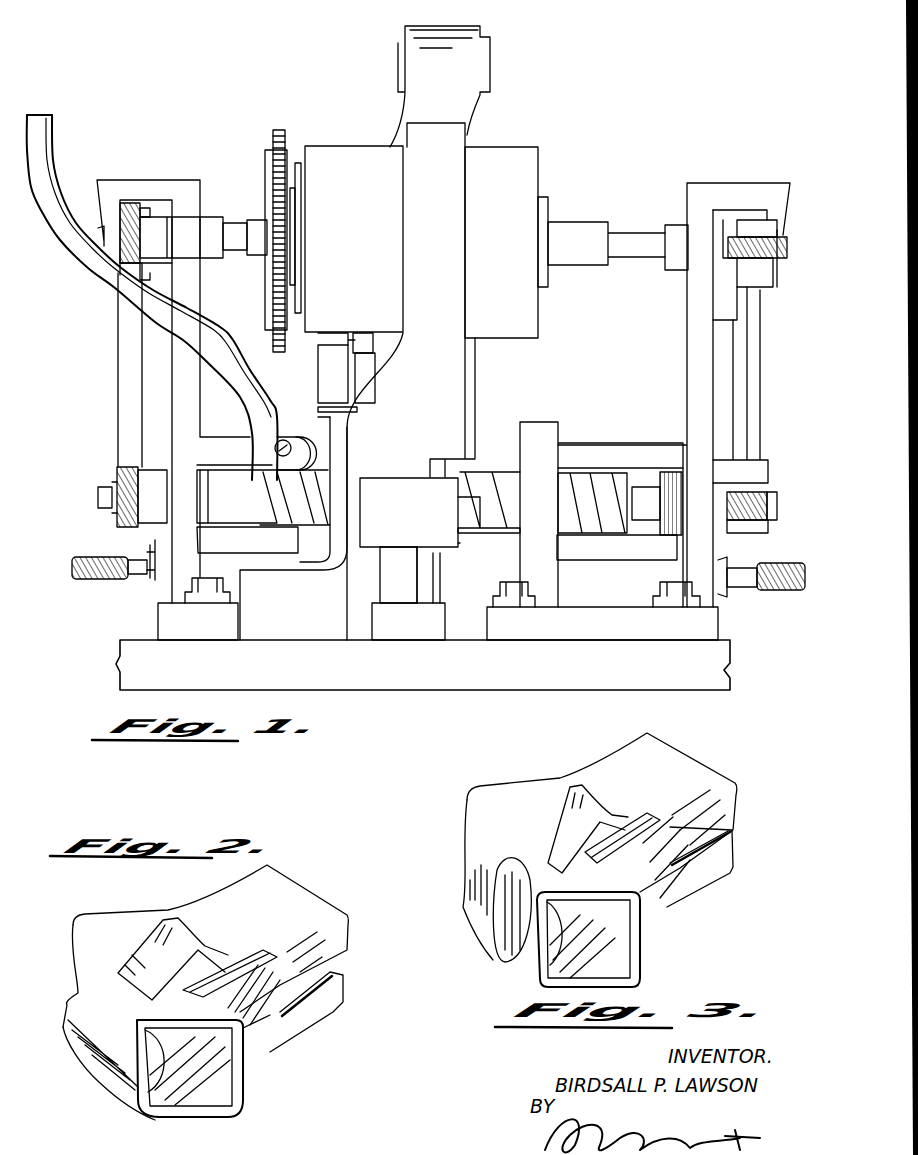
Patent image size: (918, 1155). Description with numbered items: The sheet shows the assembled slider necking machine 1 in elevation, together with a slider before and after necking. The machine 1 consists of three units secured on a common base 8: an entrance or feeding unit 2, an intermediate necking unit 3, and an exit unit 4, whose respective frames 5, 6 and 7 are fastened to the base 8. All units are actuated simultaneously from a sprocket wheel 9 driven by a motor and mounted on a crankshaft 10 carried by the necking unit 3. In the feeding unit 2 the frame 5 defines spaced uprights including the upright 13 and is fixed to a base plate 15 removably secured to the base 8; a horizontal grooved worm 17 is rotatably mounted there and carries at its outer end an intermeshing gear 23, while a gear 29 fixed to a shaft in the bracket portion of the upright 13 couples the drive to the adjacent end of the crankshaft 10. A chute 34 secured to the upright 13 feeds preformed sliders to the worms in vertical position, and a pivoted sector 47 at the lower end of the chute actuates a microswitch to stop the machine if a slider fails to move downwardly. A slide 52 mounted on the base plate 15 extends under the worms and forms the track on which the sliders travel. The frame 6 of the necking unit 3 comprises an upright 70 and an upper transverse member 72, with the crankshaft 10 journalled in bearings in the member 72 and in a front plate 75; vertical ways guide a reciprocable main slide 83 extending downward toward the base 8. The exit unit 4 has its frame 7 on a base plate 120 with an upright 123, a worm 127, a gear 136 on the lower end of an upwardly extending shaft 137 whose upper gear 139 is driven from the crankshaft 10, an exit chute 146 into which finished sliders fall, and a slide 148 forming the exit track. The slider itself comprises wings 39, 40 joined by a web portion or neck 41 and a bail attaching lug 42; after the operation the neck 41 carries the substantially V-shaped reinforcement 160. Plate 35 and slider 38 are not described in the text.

In FIG. 1, the machine 1 is at (370, 86).
In FIG. 1, the entrance or feeding unit 2 is at (140, 538).
In FIG. 1, the intermediate or necking unit 3 is at (482, 390).
In FIG. 1, the exit unit 4 is at (625, 438).
In FIG. 1, the frame 5 is at (180, 575).
In FIG. 1, the frame 6 is at (398, 590).
In FIG. 1, the frame 7 is at (700, 585).
In FIG. 1, the common base 8 is at (440, 668).
In FIG. 1, the sprocket wheel 9 is at (272, 140).
In FIG. 1, the crankshaft 10 is at (570, 232).
In FIG. 1, the upright 13 is at (180, 400).
In FIG. 1, the base plate 15 is at (175, 620).
In FIG. 1, the worm 17 is at (318, 505).
In FIG. 1, the gear 23 is at (100, 498).
In FIG. 1, the gear 29 is at (132, 205).
In FIG. 1, the chute 34 is at (80, 250).
In FIG. 1, the plate 35 is at (118, 378).
In FIG. 1, the sector 47 is at (290, 445).
In FIG. 1, the slide 52 is at (293, 548).
In FIG. 1, the upright 70 is at (450, 163).
In FIG. 1, the upper transverse member 72 is at (360, 160).
In FIG. 1, the front plate 75 is at (518, 165).
In FIG. 1, the main slide 83 is at (460, 100).
In FIG. 1, the base plate 120 is at (532, 628).
In FIG. 1, the upright 123 is at (690, 320).
In FIG. 1, the worm 127 is at (500, 450).
In FIG. 1, the gear 136 is at (775, 522).
In FIG. 1, the shaft 137 is at (745, 364).
In FIG. 1, the gear 139 is at (728, 245).
In FIG. 1, the exit chute 146 is at (638, 527).
In FIG. 1, the slide 148 is at (583, 550).
In FIG. 2, the clip 38 is at (221, 992).
In FIG. 3, the clip 38 is at (579, 870).
In FIG. 2, the wing 39 is at (292, 895).
In FIG. 3, the wing 39 is at (695, 770).
In FIG. 2, the wing 40 is at (325, 1015).
In FIG. 3, the wing 40 is at (712, 880).
In FIG. 2, the web portion or neck 41 is at (125, 1085).
In FIG. 3, the web portion or neck 41 is at (540, 960).
In FIG. 2, the bail attaching lug 42 is at (158, 940).
In FIG. 3, the bail attaching lug 42 is at (525, 850).
In FIG. 3, the V-shaped reinforcement 160 is at (505, 925).